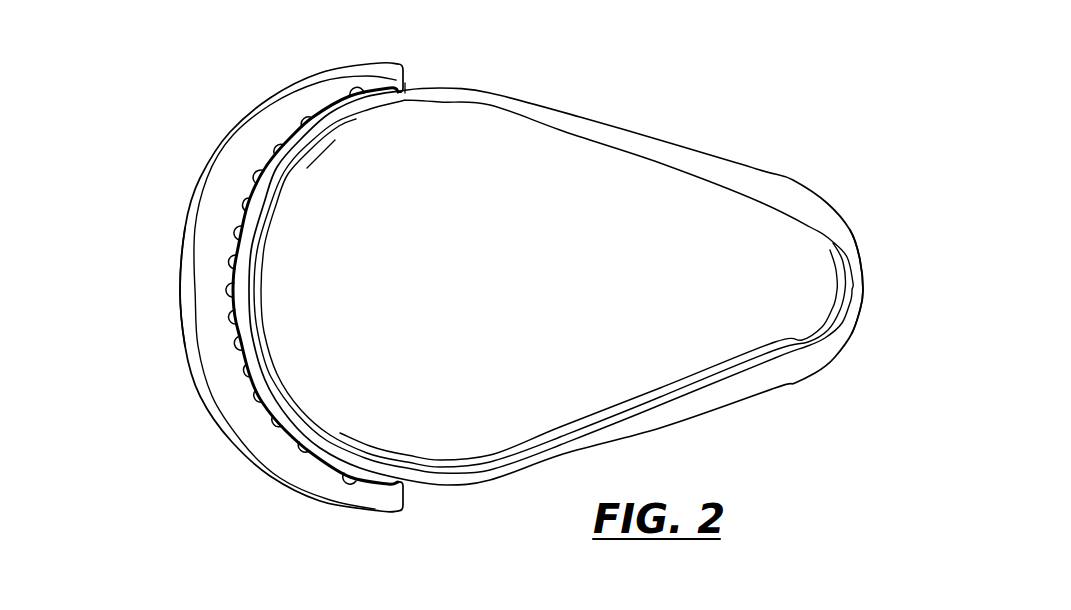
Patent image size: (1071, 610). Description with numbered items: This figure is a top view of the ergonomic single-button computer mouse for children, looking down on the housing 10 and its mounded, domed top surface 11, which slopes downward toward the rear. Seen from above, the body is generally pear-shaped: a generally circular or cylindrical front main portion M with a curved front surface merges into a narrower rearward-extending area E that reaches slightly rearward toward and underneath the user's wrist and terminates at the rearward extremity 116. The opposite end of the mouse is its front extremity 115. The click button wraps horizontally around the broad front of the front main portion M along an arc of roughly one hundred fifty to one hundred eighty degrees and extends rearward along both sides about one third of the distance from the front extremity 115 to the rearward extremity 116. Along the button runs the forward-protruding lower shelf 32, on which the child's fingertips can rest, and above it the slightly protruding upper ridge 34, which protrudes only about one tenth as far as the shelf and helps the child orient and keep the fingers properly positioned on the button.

The housing 10 is at (752, 128).
The top surface 11 is at (480, 297).
The lower shelf 32 is at (276, 451).
The upper ridge 34 is at (322, 118).
The front extremity 115 is at (180, 298).
The rearward extremity 116 is at (863, 290).
The front main portion M is at (387, 233).
The rearward-extending area E is at (780, 272).